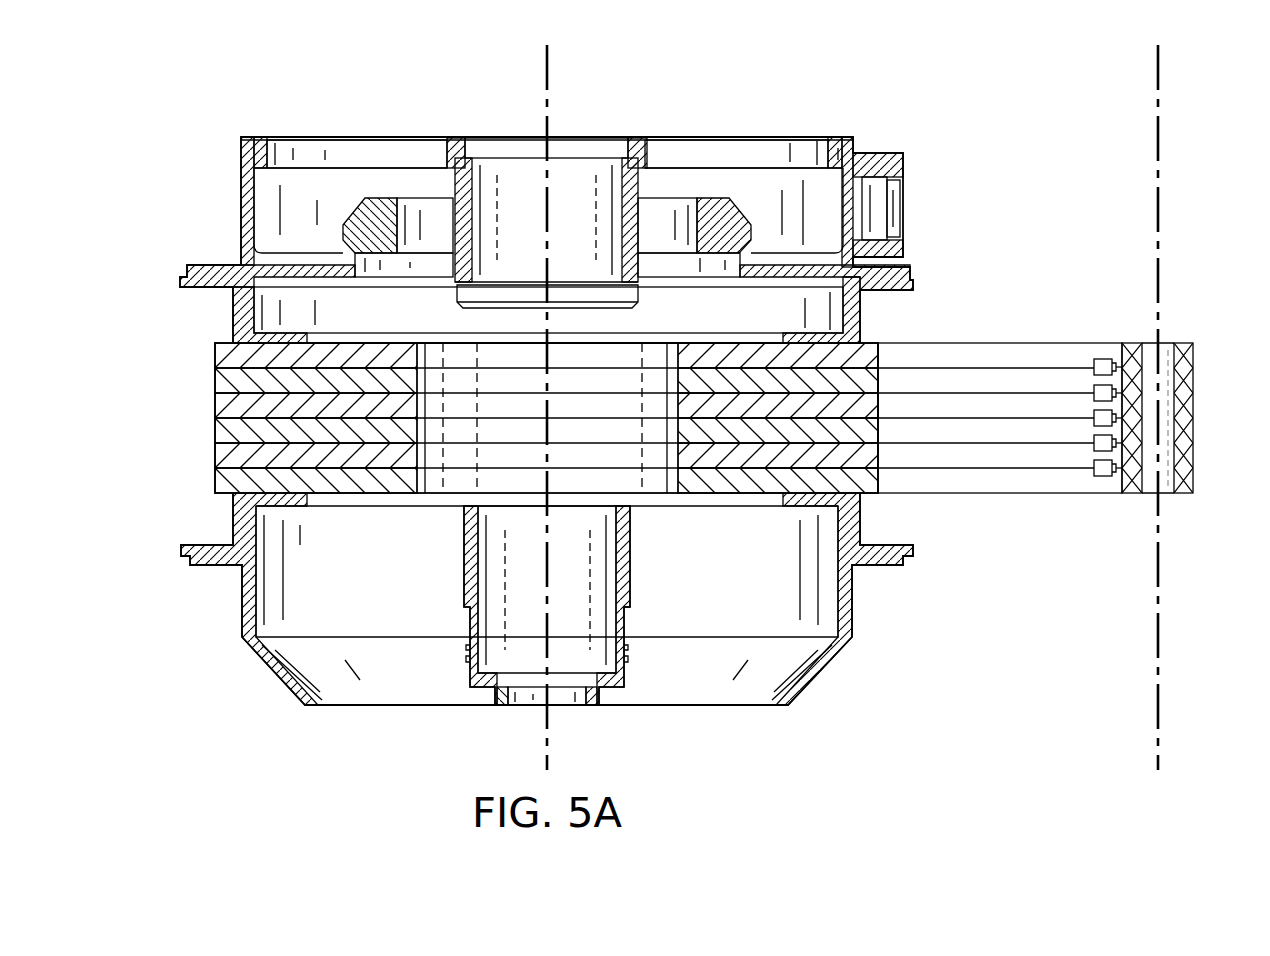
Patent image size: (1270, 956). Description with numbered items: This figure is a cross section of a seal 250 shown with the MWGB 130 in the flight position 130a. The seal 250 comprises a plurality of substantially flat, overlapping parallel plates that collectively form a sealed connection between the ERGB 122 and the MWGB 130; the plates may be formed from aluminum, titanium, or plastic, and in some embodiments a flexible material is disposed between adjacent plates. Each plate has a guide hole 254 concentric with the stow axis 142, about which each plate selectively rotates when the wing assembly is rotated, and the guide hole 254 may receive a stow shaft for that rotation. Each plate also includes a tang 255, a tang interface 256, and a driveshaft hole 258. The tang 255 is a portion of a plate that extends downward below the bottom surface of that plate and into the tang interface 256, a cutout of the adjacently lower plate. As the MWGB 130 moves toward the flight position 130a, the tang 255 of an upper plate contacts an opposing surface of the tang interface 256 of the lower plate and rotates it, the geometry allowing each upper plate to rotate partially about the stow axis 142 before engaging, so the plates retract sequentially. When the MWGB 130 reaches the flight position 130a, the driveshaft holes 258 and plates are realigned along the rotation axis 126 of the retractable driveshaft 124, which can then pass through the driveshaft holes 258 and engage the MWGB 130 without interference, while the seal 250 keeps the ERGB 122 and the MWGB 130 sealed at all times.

The ERGB 122 is at (242, 598).
The retractable driveshaft 124 is at (466, 595).
The rotation axis 126 is at (545, 68).
The MWGB 130 is at (353, 137).
The flight position 130a is at (240, 197).
The stow axis 142 is at (1160, 142).
The seal 250 is at (374, 500).
The guide hole 254 is at (1193, 375).
The tang 255 is at (1100, 358).
The tang interface 256 is at (1007, 350).
The driveshaft hole 258 is at (667, 497).